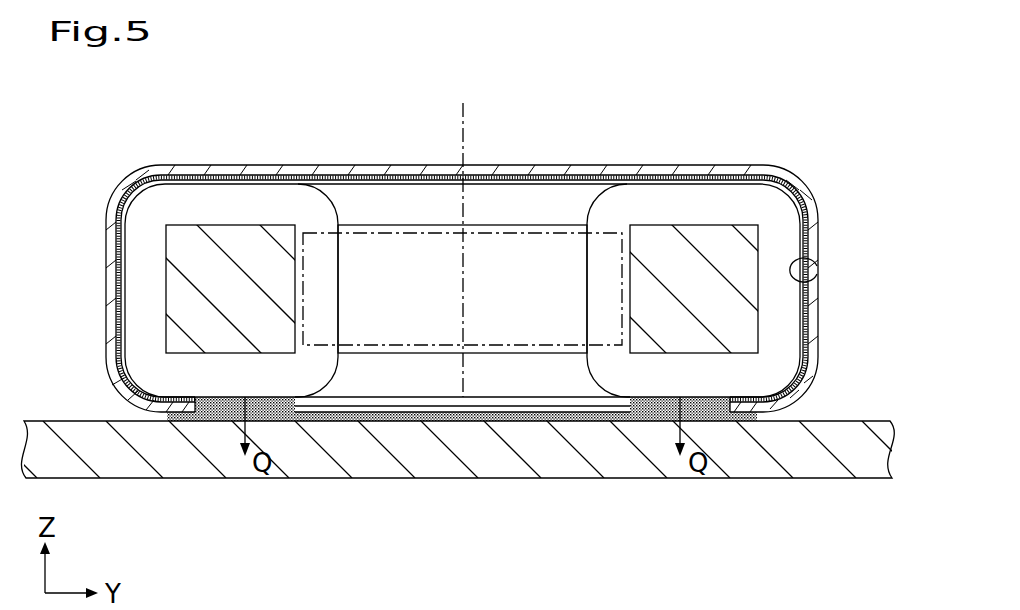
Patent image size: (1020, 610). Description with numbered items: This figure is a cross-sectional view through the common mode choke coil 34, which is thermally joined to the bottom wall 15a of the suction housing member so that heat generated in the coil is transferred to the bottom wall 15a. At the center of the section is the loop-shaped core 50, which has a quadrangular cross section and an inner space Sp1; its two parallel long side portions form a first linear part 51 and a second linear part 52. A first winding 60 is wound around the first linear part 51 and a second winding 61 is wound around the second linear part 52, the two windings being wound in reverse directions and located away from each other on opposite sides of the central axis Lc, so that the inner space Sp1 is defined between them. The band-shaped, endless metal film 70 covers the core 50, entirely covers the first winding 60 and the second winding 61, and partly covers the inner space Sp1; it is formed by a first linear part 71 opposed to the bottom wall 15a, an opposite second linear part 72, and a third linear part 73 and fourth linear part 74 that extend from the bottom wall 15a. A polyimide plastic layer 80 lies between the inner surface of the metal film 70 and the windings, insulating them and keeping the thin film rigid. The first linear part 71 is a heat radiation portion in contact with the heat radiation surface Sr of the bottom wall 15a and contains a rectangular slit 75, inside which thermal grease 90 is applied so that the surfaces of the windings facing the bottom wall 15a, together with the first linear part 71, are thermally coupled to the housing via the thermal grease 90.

The bottom wall 15a is at (840, 421).
The common mode choke coil 34 is at (853, 182).
The core 50 is at (415, 223).
The first linear part 51 is at (695, 225).
The second linear part 52 is at (233, 225).
The first winding 60 is at (750, 203).
The second winding 61 is at (178, 207).
The metal film 70 is at (470, 303).
The first linear part 71 is at (183, 421).
The second linear part 72 is at (353, 165).
The third linear part 73 is at (820, 245).
The fourth linear part 74 is at (107, 273).
The slit 75 is at (218, 418).
The plastic layer 80 is at (817, 268).
The thermal grease 90 is at (277, 415).
The central axis Lc is at (465, 130).
The inner space Sp1 is at (527, 233).
The heat radiation surface Sr is at (472, 421).